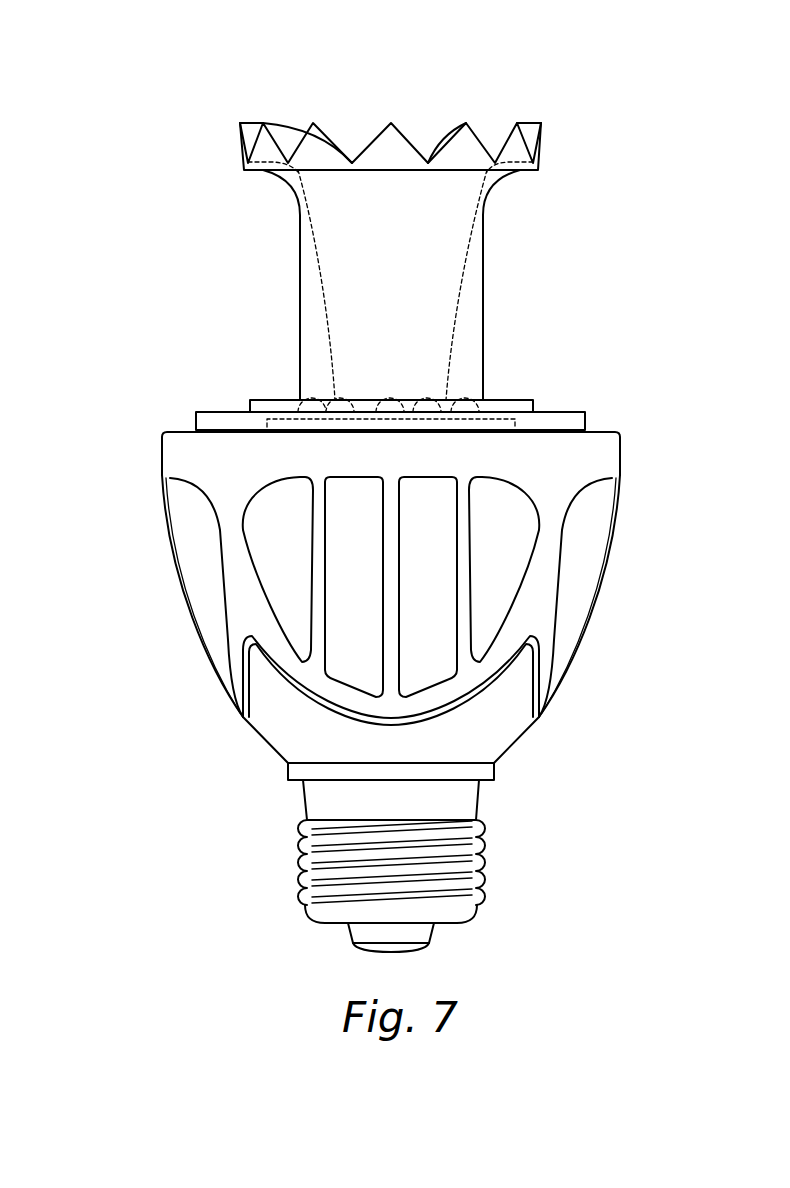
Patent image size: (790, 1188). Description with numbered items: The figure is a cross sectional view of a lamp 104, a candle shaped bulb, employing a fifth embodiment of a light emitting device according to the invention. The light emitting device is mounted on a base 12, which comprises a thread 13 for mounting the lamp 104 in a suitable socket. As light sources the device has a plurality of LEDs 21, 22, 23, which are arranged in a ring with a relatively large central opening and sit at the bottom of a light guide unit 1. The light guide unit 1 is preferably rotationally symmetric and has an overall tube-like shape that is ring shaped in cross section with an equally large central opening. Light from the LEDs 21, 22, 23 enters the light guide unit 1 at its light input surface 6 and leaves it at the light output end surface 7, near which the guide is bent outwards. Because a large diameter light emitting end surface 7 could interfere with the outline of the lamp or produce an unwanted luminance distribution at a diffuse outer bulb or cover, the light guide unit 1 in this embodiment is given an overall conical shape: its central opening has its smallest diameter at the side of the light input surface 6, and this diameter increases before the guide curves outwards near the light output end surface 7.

The lamp 104 is at (140, 388).
The light guide unit 1 is at (408, 207).
The light output end surface 7 is at (543, 155).
The LED 21 is at (307, 402).
The LED 22 is at (392, 400).
The light input surface 6 is at (420, 400).
The LED 23 is at (475, 400).
The base 12 is at (578, 557).
The thread 13 is at (462, 875).